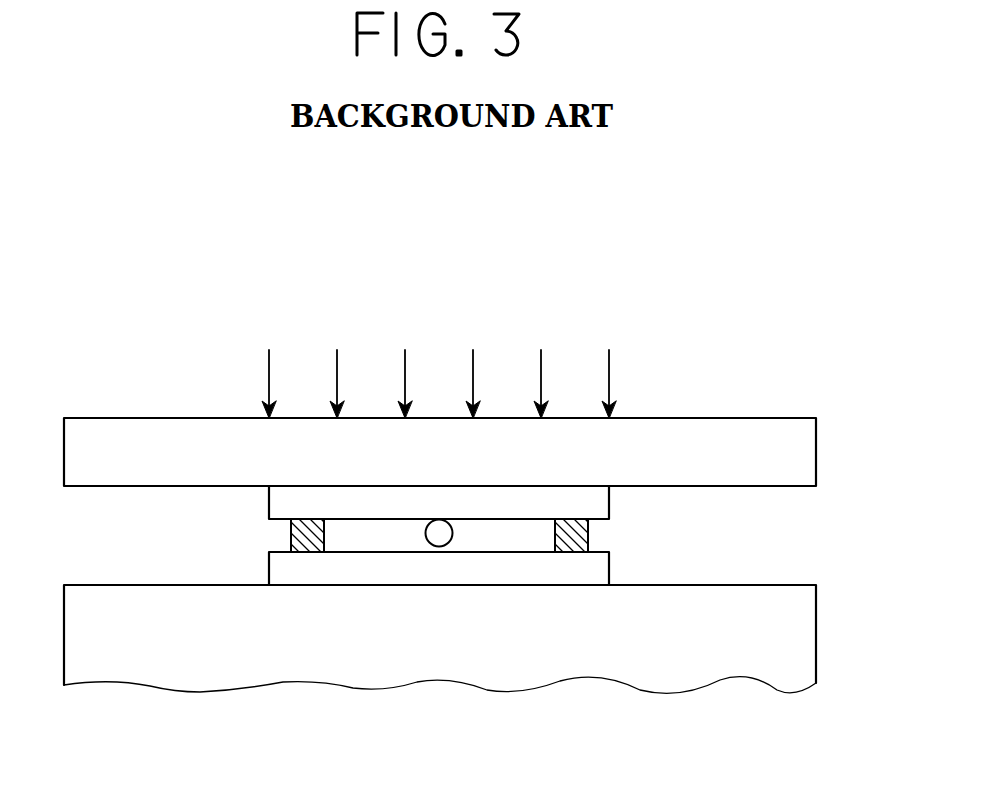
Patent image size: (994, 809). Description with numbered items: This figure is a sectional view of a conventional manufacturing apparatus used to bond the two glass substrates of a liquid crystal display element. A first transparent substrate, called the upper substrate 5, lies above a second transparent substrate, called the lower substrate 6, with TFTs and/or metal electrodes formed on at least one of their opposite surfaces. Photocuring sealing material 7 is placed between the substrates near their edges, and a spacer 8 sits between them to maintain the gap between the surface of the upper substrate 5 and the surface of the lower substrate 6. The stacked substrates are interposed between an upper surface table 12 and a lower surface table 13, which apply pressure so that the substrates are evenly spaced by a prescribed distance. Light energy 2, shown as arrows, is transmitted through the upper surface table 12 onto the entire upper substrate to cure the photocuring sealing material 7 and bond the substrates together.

The light energy 2 is at (470, 378).
The first transparent substrate 5 is at (283, 510).
The second transparent substrate 6 is at (310, 569).
The photocuring sealing material 7 is at (575, 538).
The spacer 8 is at (438, 537).
The upper surface table 12 is at (750, 463).
The lower surface table 13 is at (748, 663).